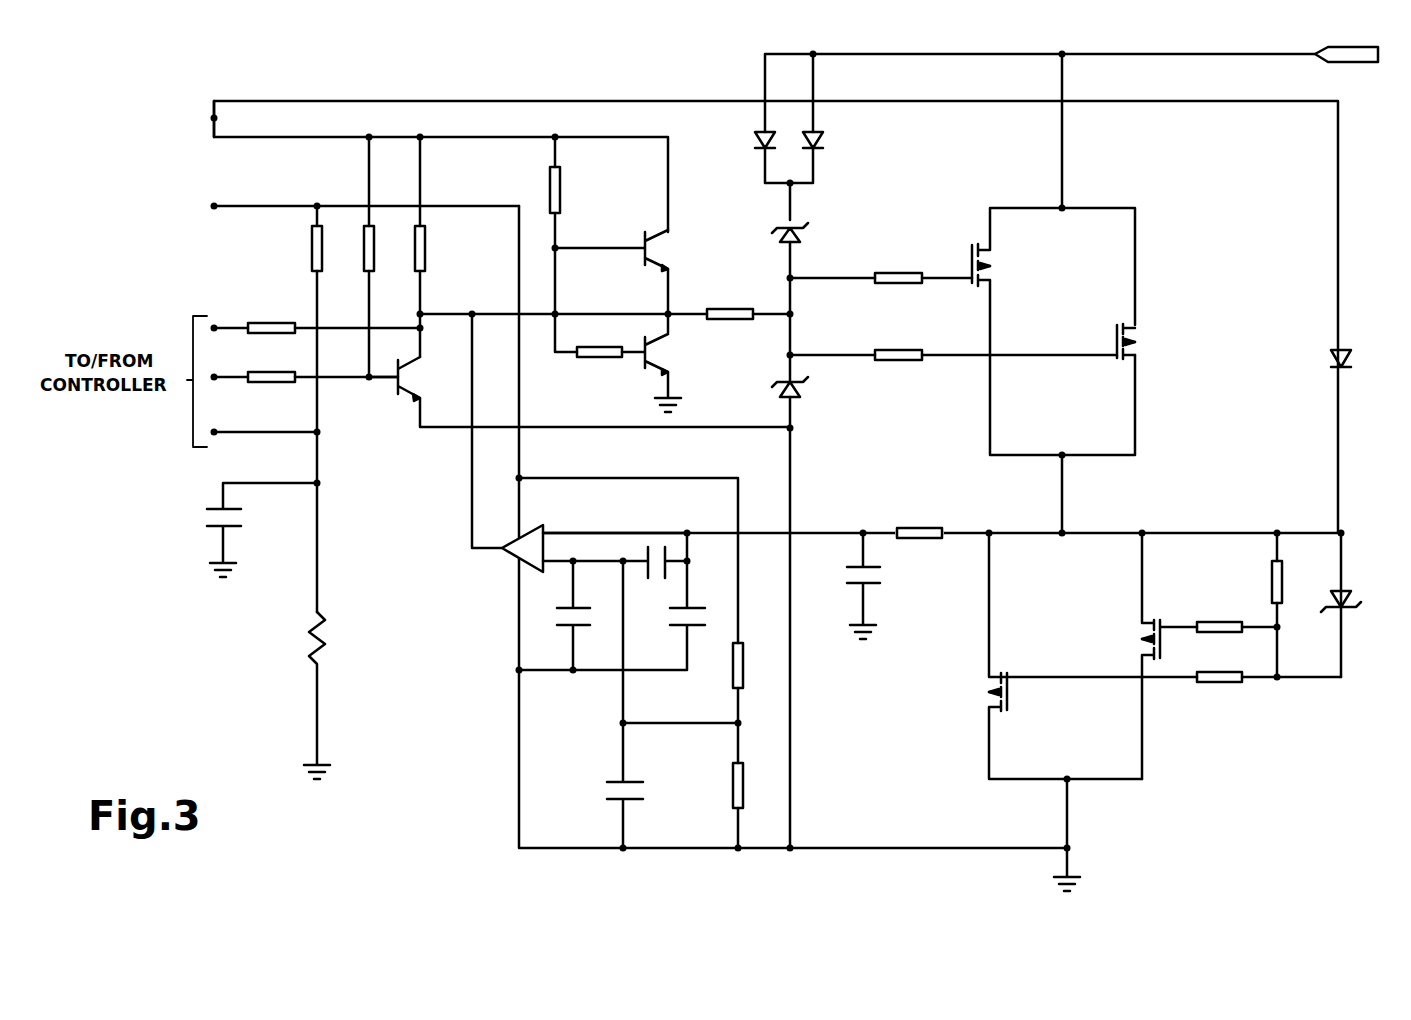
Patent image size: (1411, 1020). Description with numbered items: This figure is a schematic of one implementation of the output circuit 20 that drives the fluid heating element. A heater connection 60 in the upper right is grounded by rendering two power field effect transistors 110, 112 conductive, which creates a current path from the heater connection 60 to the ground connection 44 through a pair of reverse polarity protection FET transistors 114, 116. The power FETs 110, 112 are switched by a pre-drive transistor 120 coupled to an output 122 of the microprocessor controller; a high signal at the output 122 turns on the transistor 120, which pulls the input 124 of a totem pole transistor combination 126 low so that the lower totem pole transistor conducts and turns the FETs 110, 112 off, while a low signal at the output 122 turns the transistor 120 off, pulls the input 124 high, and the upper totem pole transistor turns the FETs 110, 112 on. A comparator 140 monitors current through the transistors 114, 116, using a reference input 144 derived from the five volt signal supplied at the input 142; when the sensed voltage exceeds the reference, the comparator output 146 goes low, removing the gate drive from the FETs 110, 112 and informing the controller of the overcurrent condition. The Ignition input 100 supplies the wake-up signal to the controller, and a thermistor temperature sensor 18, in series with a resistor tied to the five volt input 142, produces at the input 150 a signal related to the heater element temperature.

The thermistor temperature sensor 18 is at (313, 641).
The output circuit 20 is at (558, 879).
The ground connection 44 is at (1075, 881).
The heater connection 60 is at (1378, 94).
The Ignition input 100 is at (212, 118).
The power Field Effect Transistor 110 is at (990, 260).
The power Field Effect Transistor 112 is at (1136, 336).
The reverse polarity protection FET transistor 114 is at (1000, 694).
The reverse polarity protection FET transistor 116 is at (1140, 646).
The pre-drive transistor 120 is at (397, 397).
The output from the microprocessor controller 122 is at (230, 379).
The input of totem pole transistor combination 124 is at (555, 283).
The totem pole transistor combination 126 is at (694, 215).
The comparator 140 is at (516, 553).
The five volt input 142 is at (245, 237).
The reference input 144 is at (623, 686).
The output of the comparator 146 is at (472, 387).
The input related to heater temperature 150 is at (237, 435).